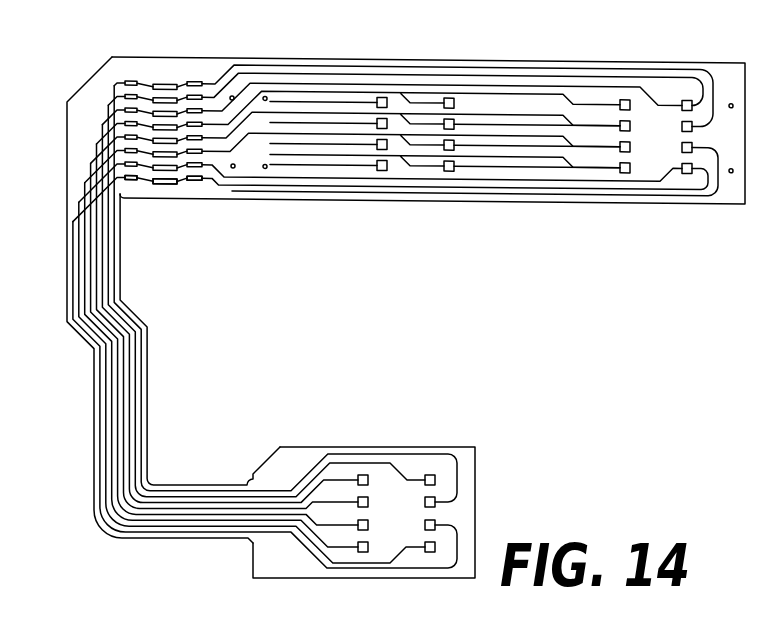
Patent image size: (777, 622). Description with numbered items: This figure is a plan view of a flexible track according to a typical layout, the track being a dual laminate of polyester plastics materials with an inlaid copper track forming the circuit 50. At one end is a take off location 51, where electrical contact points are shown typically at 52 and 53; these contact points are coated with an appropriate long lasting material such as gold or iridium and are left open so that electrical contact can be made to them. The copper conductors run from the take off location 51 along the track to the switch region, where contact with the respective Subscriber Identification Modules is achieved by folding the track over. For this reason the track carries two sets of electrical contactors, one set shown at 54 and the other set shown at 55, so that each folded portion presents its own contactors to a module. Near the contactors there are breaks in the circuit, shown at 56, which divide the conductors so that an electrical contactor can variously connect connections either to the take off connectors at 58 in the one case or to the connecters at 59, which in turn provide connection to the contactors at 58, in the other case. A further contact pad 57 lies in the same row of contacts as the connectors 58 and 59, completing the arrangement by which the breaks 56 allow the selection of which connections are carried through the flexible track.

The flexible printed circuit 50 is at (262, 339).
The take off location 51 is at (486, 505).
The electrical contact points 52 is at (435, 478).
The electrical contact points 53 is at (366, 475).
The electrical contactors 54 is at (387, 168).
The electrical contactors 55 is at (630, 173).
The breaks in the circuit 56 is at (133, 180).
The contact pad 57 is at (198, 82).
The take off connectors 58 is at (165, 83).
The connecters 59 is at (126, 78).